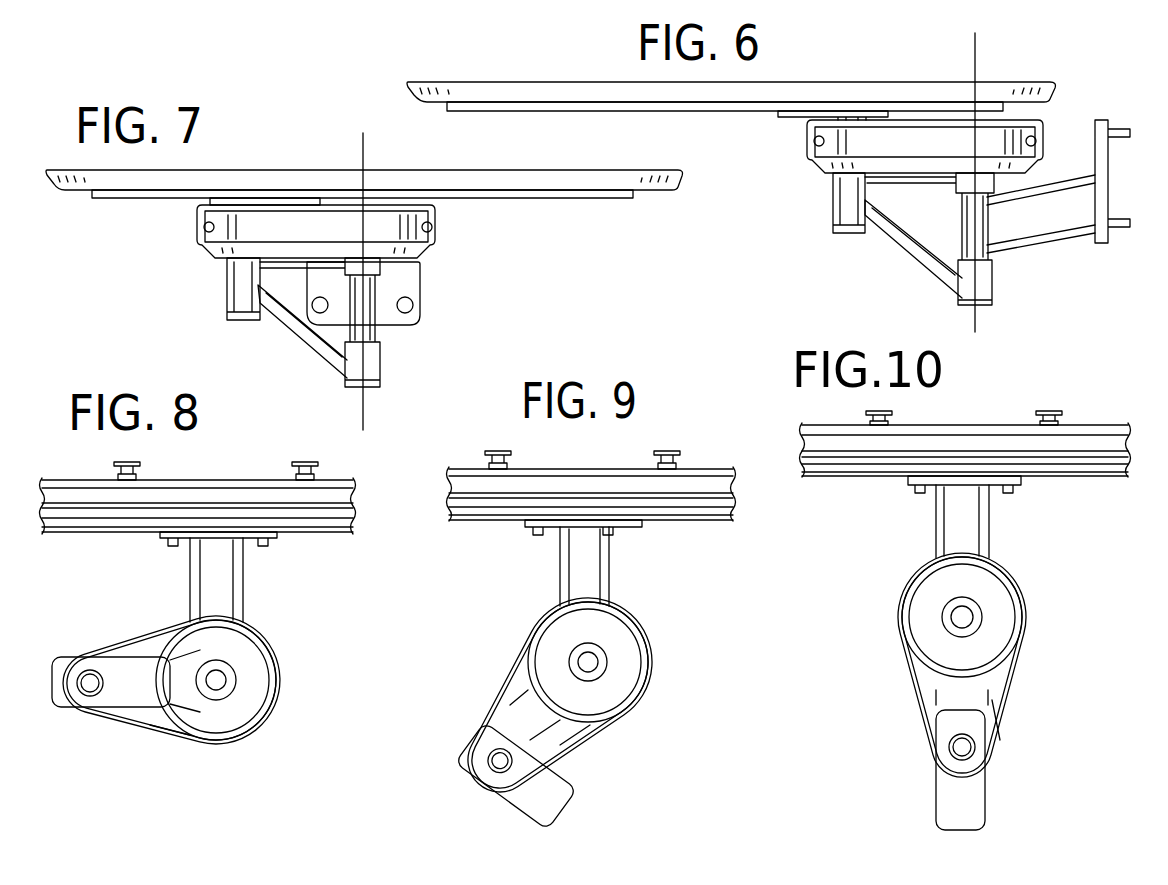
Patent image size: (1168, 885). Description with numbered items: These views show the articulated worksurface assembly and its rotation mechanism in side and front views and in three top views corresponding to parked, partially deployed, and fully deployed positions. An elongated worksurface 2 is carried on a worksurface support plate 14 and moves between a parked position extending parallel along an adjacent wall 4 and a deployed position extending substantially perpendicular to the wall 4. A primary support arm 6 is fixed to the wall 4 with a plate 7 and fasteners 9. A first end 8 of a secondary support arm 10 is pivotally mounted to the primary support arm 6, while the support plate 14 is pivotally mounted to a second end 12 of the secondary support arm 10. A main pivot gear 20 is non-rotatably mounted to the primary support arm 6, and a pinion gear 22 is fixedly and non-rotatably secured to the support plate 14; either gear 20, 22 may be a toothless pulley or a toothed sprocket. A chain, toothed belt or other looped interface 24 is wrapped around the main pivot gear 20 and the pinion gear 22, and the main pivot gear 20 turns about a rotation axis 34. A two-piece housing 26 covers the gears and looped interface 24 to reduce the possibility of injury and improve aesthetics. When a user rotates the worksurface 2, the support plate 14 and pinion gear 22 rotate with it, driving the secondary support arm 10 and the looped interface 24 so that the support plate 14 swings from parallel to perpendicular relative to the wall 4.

In FIG. 6, the worksurface 2 is at (855, 82).
In FIG. 7, the worksurface 2 is at (250, 176).
In FIG. 8, the wall 4 is at (72, 494).
In FIG. 9, the wall 4 is at (694, 478).
In FIG. 10, the wall 4 is at (968, 441).
In FIG. 6, the primary support arm 6 is at (1061, 218).
In FIG. 8, the primary support arm 6 is at (228, 579).
In FIG. 9, the primary support arm 6 is at (597, 561).
In FIG. 10, the primary support arm 6 is at (973, 524).
In FIG. 6, the plate 7 is at (1095, 152).
In FIG. 7, the plate 7 is at (420, 272).
In FIG. 8, the plate 7 is at (175, 537).
In FIG. 9, the plate 7 is at (555, 527).
In FIG. 10, the plate 7 is at (930, 488).
In FIG. 6, the first end of secondary support arm 8 is at (912, 183).
In FIG. 7, the first end of secondary support arm 8 is at (380, 352).
In FIG. 7, the fasteners 9 is at (412, 311).
In FIG. 6, the secondary support arm 10 is at (985, 278).
In FIG. 7, the secondary support arm 10 is at (303, 338).
In FIG. 8, the secondary support arm 10 is at (150, 647).
In FIG. 9, the secondary support arm 10 is at (524, 700).
In FIG. 10, the secondary support arm 10 is at (978, 694).
In FIG. 6, the second end of secondary support arm 12 is at (833, 190).
In FIG. 7, the second end of secondary support arm 12 is at (227, 275).
In FIG. 8, the worksurface support plate 14 is at (130, 686).
In FIG. 9, the worksurface support plate 14 is at (516, 780).
In FIG. 10, the worksurface support plate 14 is at (950, 794).
In FIG. 8, the main pivot gear 20 is at (258, 657).
In FIG. 9, the main pivot gear 20 is at (628, 645).
In FIG. 10, the main pivot gear 20 is at (1005, 595).
In FIG. 8, the pinion gear 22 is at (92, 656).
In FIG. 9, the pinion gear 22 is at (505, 690).
In FIG. 10, the pinion gear 22 is at (932, 744).
In FIG. 8, the looped interface 24 is at (168, 737).
In FIG. 9, the looped interface 24 is at (587, 740).
In FIG. 10, the looped interface 24 is at (1007, 711).
In FIG. 6, the housing 26 is at (921, 156).
In FIG. 7, the housing 26 is at (338, 236).
In FIG. 6, the rotation axis 34 is at (977, 50).
In FIG. 7, the rotation axis 34 is at (365, 142).
In FIG. 8, the rotation axis 34 is at (218, 682).
In FIG. 9, the rotation axis 34 is at (590, 662).
In FIG. 10, the rotation axis 34 is at (964, 618).